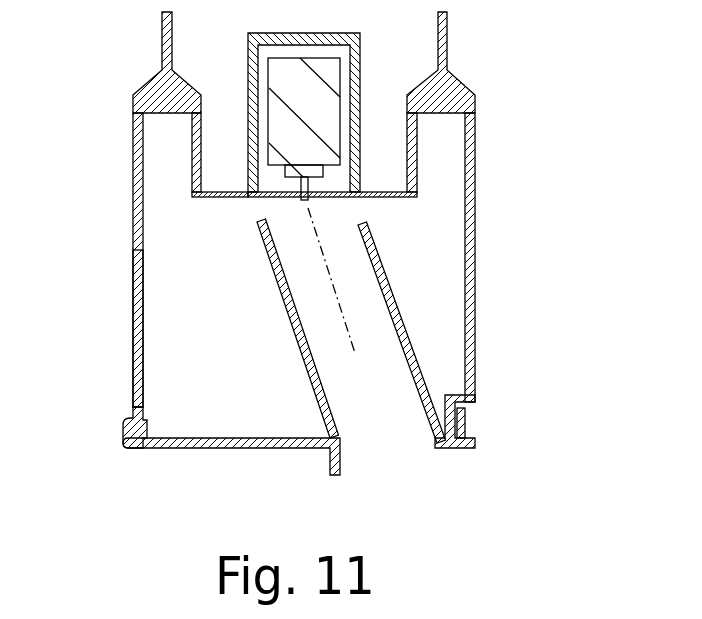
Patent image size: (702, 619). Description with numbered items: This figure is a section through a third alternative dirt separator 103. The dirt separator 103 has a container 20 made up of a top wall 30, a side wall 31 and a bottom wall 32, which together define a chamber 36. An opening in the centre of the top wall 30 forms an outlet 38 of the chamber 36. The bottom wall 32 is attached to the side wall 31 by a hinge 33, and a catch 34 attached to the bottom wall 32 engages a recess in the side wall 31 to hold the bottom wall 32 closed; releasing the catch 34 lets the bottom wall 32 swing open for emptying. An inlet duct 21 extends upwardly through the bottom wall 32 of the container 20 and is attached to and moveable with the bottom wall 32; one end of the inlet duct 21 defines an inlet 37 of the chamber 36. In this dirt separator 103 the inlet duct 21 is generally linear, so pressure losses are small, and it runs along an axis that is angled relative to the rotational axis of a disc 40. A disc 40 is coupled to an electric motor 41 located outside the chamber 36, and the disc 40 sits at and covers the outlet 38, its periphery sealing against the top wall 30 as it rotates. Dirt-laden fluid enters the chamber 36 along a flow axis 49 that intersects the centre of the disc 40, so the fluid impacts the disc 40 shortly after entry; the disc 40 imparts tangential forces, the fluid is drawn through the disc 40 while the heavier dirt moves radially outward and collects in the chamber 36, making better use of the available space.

The dirt separator 103 is at (525, 62).
The container 20 is at (475, 285).
The inlet duct 21 is at (410, 348).
The top wall 30 is at (172, 113).
The side wall 31 is at (133, 352).
The bottom wall 32 is at (225, 450).
The hinge 33 is at (468, 412).
The catch 34 is at (128, 423).
The chamber 36 is at (198, 302).
The inlet 37 is at (285, 222).
The outlet 38 is at (225, 192).
The disc 40 is at (392, 200).
The electric motor 41 is at (330, 128).
The flow axis 49 is at (358, 360).